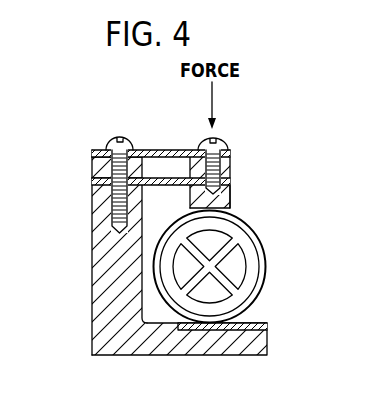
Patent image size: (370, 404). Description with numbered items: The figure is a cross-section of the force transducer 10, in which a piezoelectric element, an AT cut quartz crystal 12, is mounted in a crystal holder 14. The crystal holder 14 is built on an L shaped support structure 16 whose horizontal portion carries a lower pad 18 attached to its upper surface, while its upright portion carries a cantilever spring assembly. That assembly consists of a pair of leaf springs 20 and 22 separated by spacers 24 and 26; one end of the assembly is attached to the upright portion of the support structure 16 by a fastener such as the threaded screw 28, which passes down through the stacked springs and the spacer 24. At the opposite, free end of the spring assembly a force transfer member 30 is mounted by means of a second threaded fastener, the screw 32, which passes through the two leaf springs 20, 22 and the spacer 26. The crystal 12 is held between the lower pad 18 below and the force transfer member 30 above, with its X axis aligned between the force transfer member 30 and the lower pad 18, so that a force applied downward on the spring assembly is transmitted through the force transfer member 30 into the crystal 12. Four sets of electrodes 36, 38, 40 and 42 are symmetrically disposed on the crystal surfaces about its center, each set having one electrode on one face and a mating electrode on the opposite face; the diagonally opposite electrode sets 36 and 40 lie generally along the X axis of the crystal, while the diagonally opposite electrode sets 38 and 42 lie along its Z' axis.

The force transducer 10 is at (165, 229).
The quartz crystal 12 is at (210, 268).
The crystal holder 14 is at (84, 279).
The L shaped support structure 16 is at (107, 319).
The lower pad 18 is at (258, 321).
The leaf spring 20 is at (177, 187).
The leaf spring 22 is at (155, 148).
The spacer 24 is at (100, 160).
The spacer 26 is at (234, 177).
The threaded screw 28 is at (113, 138).
The force transfer member 30 is at (230, 192).
The screw 32 is at (221, 137).
The electrode set 36 is at (217, 236).
The electrode set 38 is at (235, 257).
The electrode set 40 is at (218, 294).
The electrode set 42 is at (182, 263).